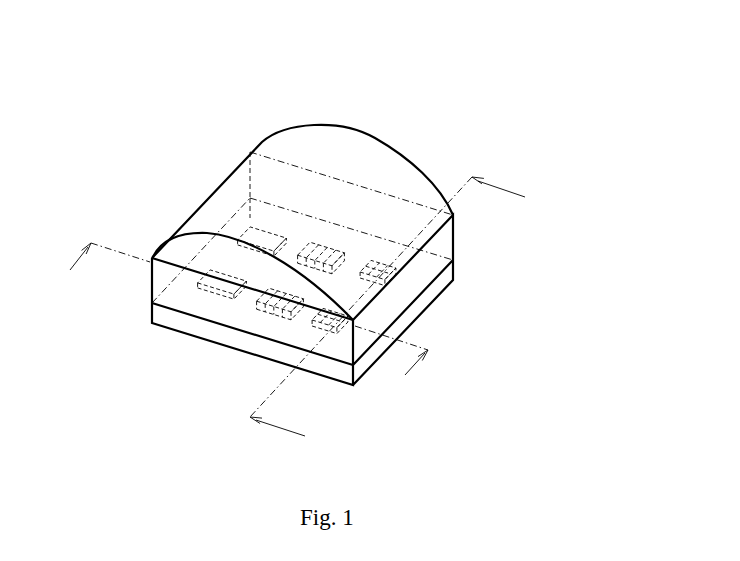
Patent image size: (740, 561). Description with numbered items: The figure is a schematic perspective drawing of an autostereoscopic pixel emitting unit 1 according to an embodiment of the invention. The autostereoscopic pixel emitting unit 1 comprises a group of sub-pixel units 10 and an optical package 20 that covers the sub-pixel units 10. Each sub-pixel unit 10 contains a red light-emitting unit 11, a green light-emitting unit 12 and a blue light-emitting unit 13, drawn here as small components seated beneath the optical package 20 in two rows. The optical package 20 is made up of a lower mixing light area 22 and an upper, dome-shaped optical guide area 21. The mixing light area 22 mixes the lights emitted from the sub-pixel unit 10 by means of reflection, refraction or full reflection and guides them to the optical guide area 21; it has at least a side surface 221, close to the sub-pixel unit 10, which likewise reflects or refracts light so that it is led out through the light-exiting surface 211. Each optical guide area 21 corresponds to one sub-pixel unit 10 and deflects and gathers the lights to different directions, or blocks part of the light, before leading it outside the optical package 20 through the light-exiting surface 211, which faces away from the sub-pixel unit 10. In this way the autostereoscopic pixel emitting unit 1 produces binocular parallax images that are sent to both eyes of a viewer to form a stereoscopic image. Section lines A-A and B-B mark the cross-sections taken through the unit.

The autostereoscopic pixel emitting unit 1 is at (454, 74).
The sub-pixel unit 10 is at (262, 52).
The red light-emitting unit 11 is at (263, 232).
The green light-emitting unit 12 is at (323, 244).
The blue light-emitting unit 13 is at (374, 258).
The optical package 20 is at (592, 123).
The optical guide area 21 is at (427, 180).
The light-exiting surface 211 is at (369, 128).
The mixing light area 22 is at (452, 243).
The side surface 221 is at (152, 279).